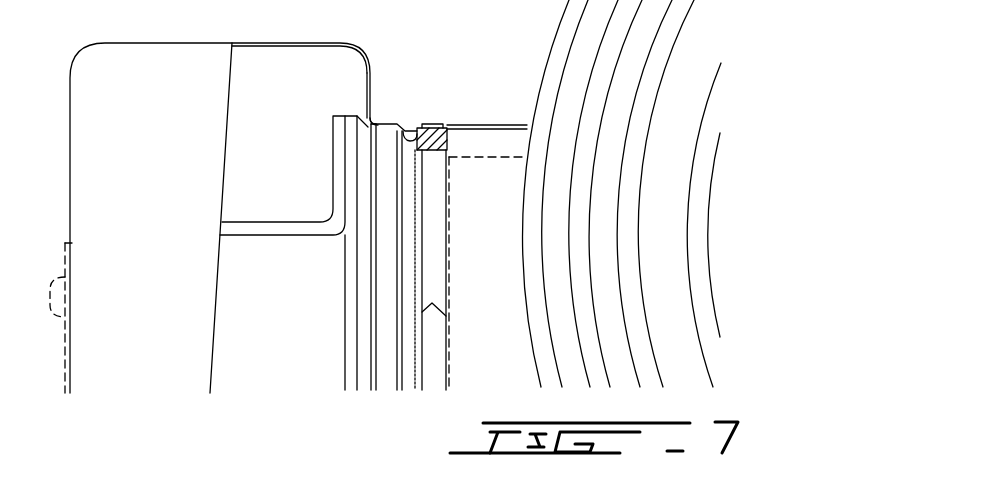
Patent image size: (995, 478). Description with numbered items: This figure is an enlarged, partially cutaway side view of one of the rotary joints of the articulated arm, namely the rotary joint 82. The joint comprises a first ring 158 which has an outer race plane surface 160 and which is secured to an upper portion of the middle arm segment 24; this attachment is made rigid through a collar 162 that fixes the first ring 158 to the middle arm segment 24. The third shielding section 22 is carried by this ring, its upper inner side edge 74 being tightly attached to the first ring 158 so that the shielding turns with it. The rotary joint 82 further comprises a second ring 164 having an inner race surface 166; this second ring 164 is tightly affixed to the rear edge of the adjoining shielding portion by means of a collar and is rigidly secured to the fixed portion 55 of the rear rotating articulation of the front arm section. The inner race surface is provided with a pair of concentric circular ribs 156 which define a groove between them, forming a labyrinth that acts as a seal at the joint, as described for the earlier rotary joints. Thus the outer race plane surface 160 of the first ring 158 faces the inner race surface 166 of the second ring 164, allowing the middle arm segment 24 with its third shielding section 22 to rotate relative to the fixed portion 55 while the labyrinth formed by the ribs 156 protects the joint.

The third shielding section 22 is at (125, 190).
The middle arm segment 24 is at (273, 236).
The fixed portion 55 is at (430, 278).
The upper inner side edge 74 is at (372, 120).
The rotary joint 82 is at (431, 115).
The concentric circular ribs 156 is at (402, 133).
The first ring 158 is at (367, 370).
The outer race plane surface 160 is at (413, 127).
The collar 162 is at (388, 373).
The second ring 164 is at (447, 129).
The inner race surface 166 is at (418, 145).